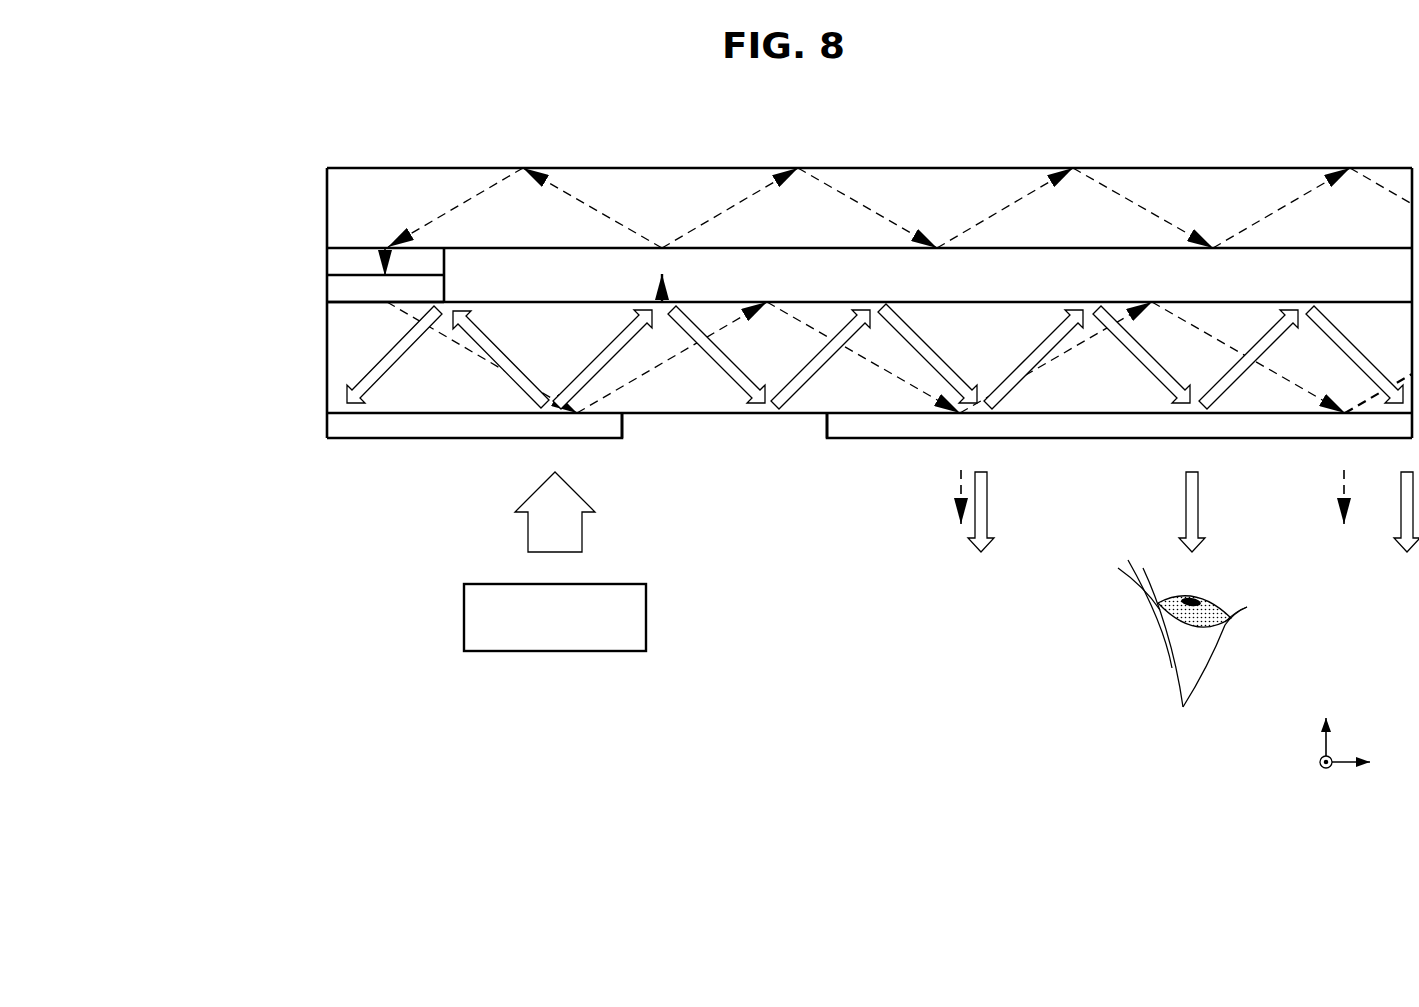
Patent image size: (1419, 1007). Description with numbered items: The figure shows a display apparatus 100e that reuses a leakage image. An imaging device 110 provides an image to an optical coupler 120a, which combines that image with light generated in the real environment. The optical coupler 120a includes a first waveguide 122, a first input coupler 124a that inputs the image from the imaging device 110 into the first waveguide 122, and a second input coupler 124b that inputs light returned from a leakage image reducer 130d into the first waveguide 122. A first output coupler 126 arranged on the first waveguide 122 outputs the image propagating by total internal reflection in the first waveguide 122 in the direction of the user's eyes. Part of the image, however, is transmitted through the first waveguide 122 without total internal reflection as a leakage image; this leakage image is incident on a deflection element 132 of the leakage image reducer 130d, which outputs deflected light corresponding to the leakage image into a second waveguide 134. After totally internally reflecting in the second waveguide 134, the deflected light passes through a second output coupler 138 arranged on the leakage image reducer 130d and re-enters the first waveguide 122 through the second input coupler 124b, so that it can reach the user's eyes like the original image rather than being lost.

The display apparatus 100e is at (1327, 91).
The imaging device 110 is at (555, 640).
The optical coupler 120a is at (210, 280).
The first waveguide 122 is at (340, 357).
The first input coupler 124a is at (342, 423).
The second input coupler 124b is at (330, 283).
The first output coupler 126 is at (843, 430).
The leakage image reducer 130d is at (637, 93).
The deflection element 132 is at (483, 262).
The second waveguide 134 is at (617, 186).
The second output coupler 138 is at (357, 262).